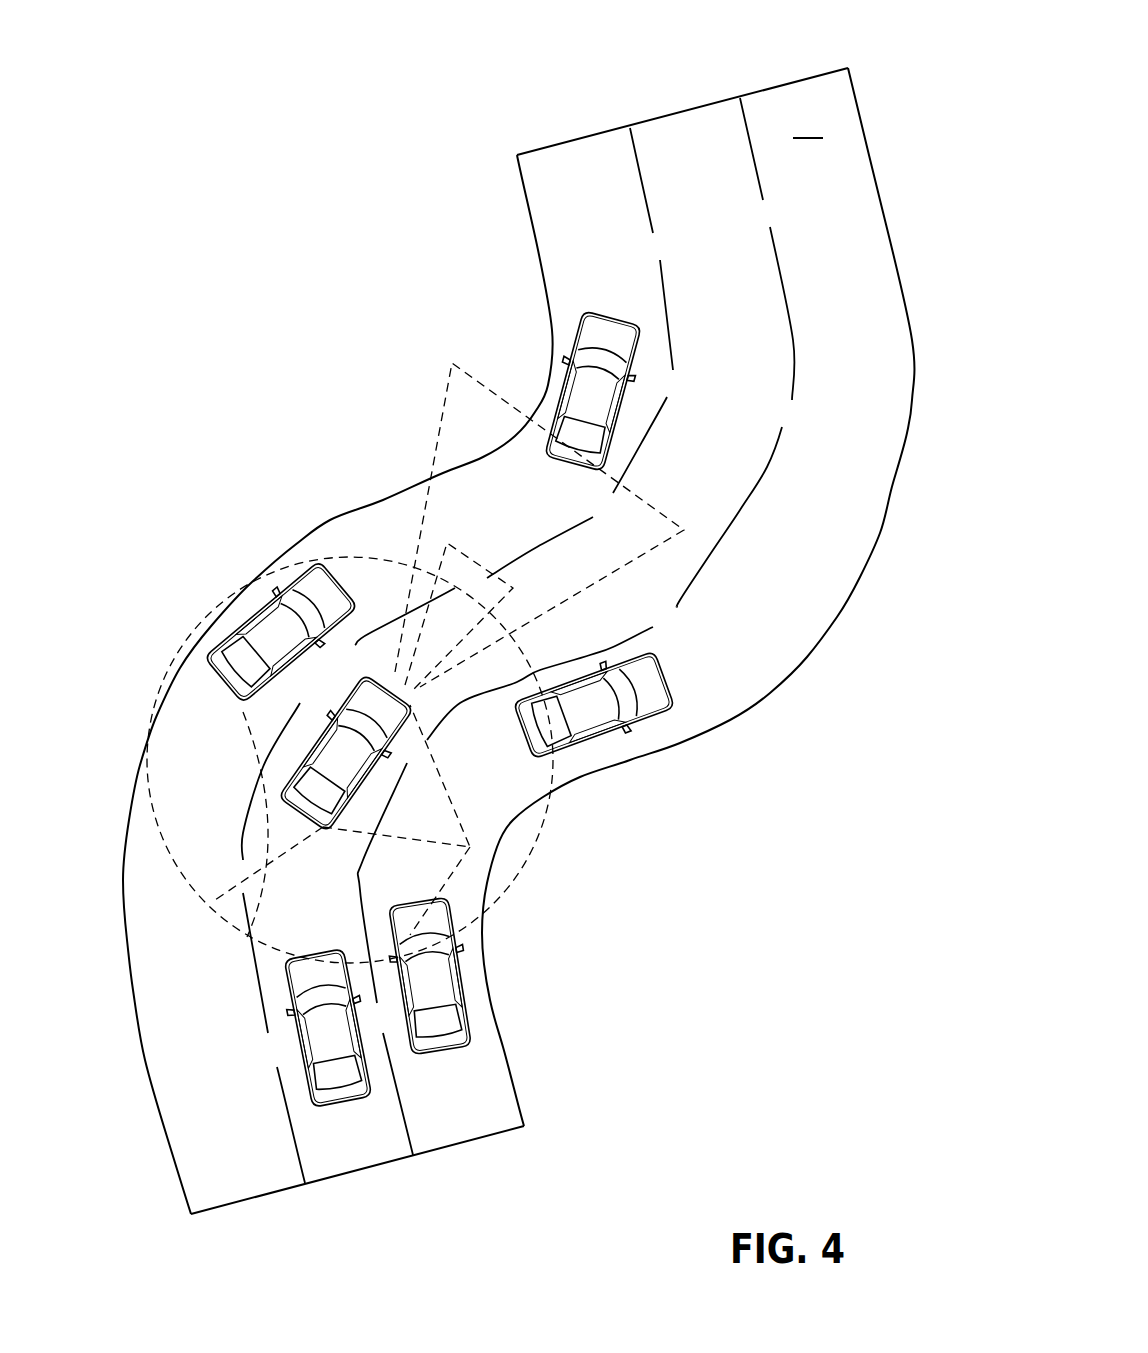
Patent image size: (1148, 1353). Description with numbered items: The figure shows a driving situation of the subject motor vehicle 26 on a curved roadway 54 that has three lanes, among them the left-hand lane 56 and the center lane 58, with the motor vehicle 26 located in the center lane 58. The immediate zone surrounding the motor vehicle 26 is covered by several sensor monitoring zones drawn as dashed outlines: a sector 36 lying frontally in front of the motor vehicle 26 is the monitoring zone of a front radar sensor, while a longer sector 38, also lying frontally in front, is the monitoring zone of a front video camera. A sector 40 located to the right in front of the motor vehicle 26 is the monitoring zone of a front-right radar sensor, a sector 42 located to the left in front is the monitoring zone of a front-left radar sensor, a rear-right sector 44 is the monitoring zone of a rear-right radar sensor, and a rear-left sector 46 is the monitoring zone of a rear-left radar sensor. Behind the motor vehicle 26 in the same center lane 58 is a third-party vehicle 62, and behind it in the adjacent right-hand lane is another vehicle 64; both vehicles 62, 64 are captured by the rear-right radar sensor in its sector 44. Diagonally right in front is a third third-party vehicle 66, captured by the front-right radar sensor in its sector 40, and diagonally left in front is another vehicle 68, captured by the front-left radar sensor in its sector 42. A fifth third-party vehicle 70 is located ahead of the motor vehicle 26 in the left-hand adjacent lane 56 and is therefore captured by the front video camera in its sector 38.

The motor vehicle 26 is at (335, 762).
The sector 36 is at (455, 568).
The longer sector 38 is at (503, 487).
The sector 40 is at (487, 763).
The sector 42 is at (360, 573).
The rear-right sector 44 is at (483, 887).
The rear-left sector 46 is at (175, 795).
The roadway 54 is at (836, 91).
The lane 56 is at (573, 195).
The center lane 58 is at (683, 166).
The third-party vehicle 62 is at (340, 1080).
The vehicle 64 is at (437, 995).
The third third-party vehicle 66 is at (625, 700).
The vehicle 68 is at (268, 637).
The fifth third-party vehicle 70 is at (594, 333).